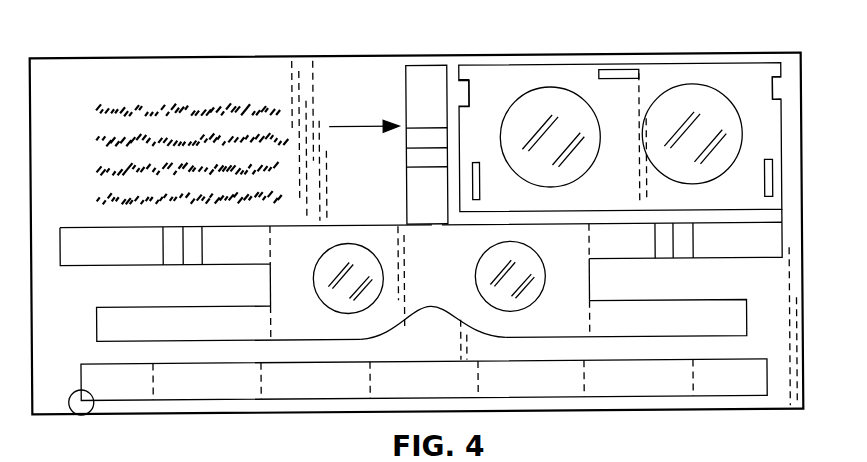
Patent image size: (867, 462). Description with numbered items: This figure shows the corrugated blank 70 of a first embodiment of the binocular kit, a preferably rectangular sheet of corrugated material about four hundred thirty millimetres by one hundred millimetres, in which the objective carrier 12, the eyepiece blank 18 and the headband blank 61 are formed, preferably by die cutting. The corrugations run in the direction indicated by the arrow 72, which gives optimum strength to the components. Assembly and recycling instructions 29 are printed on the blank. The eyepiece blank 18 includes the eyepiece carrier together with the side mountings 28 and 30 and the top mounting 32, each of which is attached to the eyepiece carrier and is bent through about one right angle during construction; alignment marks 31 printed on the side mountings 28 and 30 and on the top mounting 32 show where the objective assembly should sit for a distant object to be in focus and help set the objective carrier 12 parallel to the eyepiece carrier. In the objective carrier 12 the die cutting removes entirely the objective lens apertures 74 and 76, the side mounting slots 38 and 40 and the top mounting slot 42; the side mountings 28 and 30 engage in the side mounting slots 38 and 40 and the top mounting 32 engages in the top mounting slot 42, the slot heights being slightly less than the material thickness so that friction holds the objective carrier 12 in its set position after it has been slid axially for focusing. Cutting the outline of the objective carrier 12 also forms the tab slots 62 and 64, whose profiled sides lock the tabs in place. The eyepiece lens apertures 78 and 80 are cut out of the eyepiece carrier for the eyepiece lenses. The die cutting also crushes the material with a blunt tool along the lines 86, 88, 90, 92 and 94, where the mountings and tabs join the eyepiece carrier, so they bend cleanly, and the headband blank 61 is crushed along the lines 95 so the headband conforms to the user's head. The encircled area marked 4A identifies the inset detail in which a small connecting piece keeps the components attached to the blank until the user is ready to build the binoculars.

The objective carrier 12 is at (694, 65).
The eyepiece blank 18 is at (782, 232).
The side mounting 28 is at (75, 265).
The assembly and recycling instructions 29 is at (63, 82).
The side mounting 30 is at (605, 261).
The alignment marks 31 is at (178, 254).
The top mounting 32 is at (407, 92).
The side mounting slot 38 is at (481, 182).
The side mounting slot 40 is at (773, 180).
The top mounting slot 42 is at (620, 71).
The headband blank 61 is at (632, 398).
The tab slot 62 is at (464, 80).
The tab slot 64 is at (782, 88).
The corrugated blank 70 is at (760, 412).
The arrow 72 is at (374, 122).
The objective lens aperture 74 is at (546, 89).
The objective lens aperture 76 is at (682, 88).
The eyepiece lens aperture 78 is at (324, 255).
The eyepiece lens aperture 80 is at (487, 256).
The crushed line 86 is at (268, 327).
The crushed line 88 is at (590, 325).
The crushed line 90 is at (432, 224).
The crushed line 92 is at (268, 250).
The crushed line 94 is at (588, 238).
The crushed lines 95 is at (150, 385).
The detail area of FIG. 4A is at (72, 403).